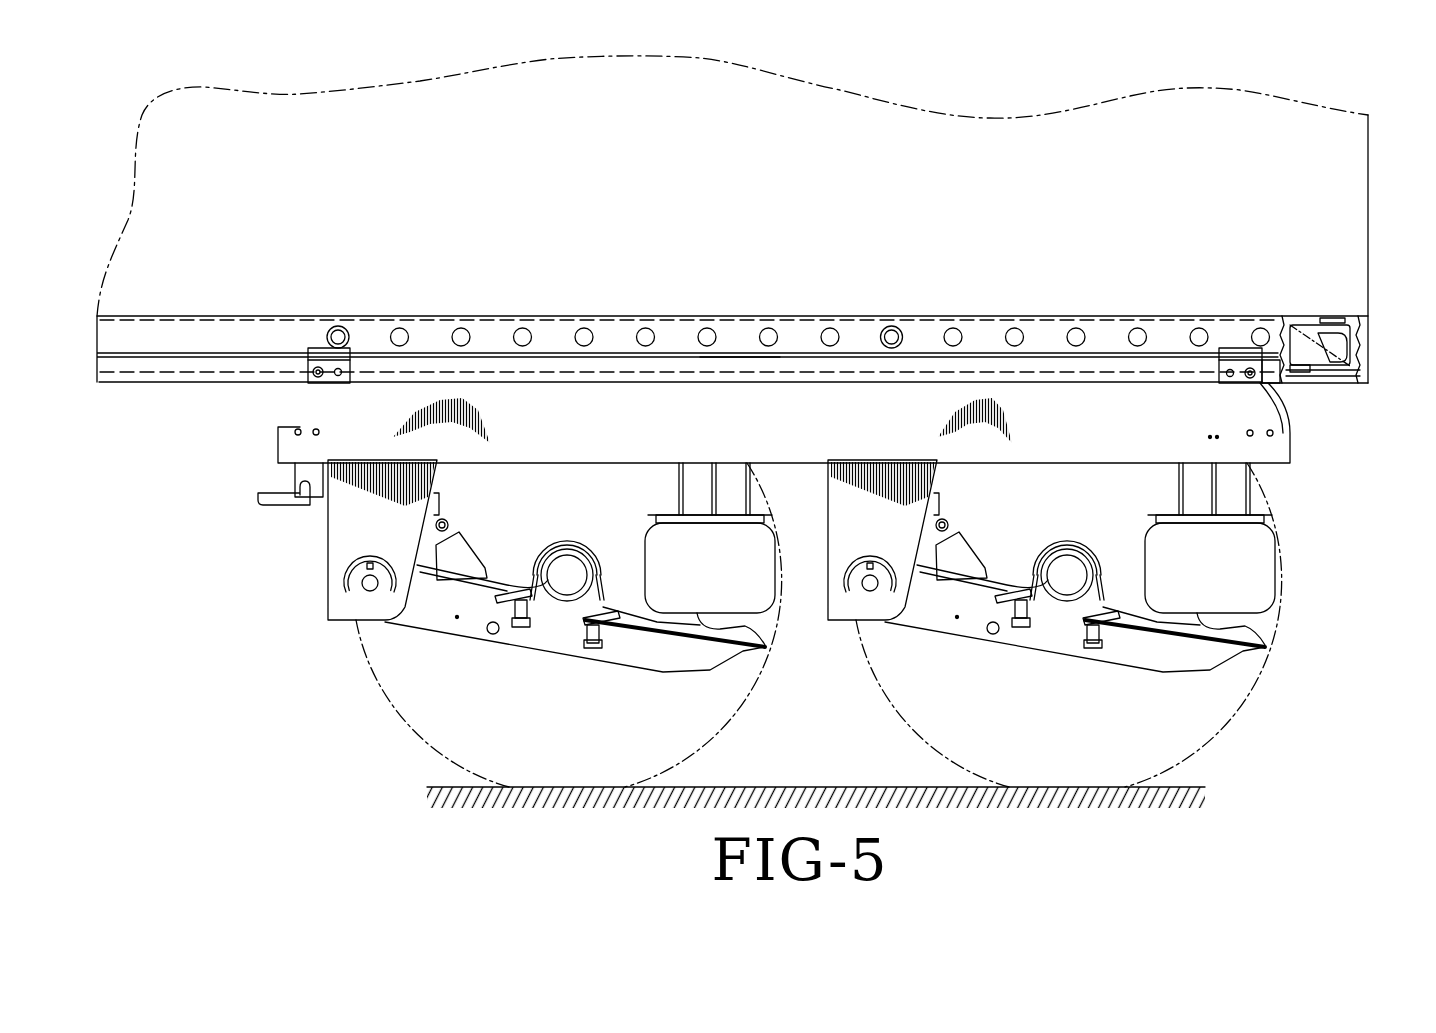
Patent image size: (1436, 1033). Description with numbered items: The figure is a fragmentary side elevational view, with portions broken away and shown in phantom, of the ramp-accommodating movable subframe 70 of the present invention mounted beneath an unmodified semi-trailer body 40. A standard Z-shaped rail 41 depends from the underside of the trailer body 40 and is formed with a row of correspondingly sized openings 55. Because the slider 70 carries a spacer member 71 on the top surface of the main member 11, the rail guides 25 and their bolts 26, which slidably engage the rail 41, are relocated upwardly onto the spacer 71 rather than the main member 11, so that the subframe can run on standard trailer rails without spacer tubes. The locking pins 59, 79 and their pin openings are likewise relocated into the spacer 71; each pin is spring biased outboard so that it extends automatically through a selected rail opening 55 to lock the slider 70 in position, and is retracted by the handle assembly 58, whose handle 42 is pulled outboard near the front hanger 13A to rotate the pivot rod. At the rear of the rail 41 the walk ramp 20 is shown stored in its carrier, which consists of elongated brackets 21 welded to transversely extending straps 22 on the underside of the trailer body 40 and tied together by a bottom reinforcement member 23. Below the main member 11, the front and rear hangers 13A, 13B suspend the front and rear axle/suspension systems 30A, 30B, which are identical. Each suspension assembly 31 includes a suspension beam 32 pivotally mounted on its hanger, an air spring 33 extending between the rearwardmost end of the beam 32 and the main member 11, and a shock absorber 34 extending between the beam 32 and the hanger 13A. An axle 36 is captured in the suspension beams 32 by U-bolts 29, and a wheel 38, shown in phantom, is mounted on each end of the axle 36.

The main member 11 is at (1300, 478).
The front hanger 13A is at (316, 614).
The rear hanger 13B is at (866, 588).
The walk ramp 20 is at (1329, 339).
The bracket 21 is at (1287, 364).
The strap 22 is at (1325, 330).
The bottom reinforcement member 23 is at (1327, 378).
The rail guide 25 is at (785, 356).
The bolt 26 is at (318, 374).
The U-bolt 29 is at (562, 540).
The front axle/suspension system 30A is at (420, 640).
The rear axle/suspension system 30B is at (1137, 638).
The suspension assembly 31 is at (711, 672).
The suspension beam 32 is at (547, 633).
The air spring 33 is at (721, 579).
The shock absorber 34 is at (463, 555).
The axle 36 is at (565, 575).
The wheel 38 is at (420, 740).
The trailer body 40 is at (928, 176).
The rail 41 is at (732, 308).
The handle 42 is at (294, 500).
The rail opening 55 is at (645, 330).
The handle assembly 58 is at (256, 510).
The pin 59 is at (341, 329).
The ramp-accommodating movable subframe 70 is at (806, 623).
The spacer member 71 is at (738, 365).
The pin 79 is at (885, 328).